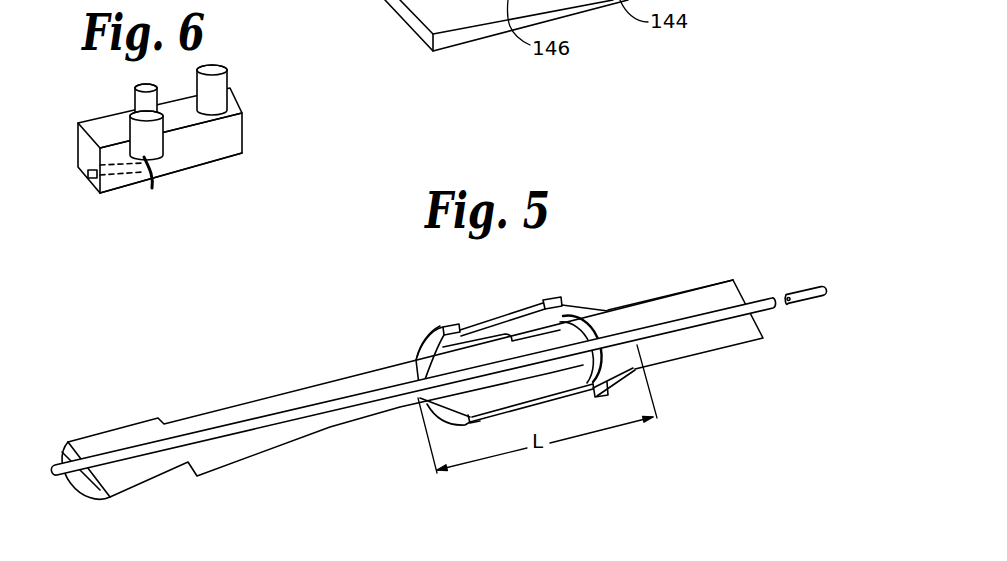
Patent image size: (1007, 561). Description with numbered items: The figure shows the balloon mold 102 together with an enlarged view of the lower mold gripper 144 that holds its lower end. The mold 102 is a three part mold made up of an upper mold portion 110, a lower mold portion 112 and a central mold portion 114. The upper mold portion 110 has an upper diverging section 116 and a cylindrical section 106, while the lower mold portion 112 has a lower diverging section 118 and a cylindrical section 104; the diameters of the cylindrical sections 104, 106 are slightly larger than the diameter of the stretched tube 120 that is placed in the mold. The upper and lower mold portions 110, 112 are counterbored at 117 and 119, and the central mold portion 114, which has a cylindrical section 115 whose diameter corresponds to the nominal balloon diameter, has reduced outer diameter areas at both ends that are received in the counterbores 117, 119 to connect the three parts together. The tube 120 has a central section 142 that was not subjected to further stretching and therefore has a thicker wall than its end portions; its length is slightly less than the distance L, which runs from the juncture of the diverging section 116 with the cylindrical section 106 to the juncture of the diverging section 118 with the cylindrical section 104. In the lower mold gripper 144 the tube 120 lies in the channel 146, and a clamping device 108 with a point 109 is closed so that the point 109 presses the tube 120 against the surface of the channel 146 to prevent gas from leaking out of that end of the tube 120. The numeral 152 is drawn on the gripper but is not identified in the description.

In FIG. 6, the mold 102 is at (143, 98).
In FIG. 5, the cylindrical section of lower mold portion 104 is at (213, 427).
In FIG. 5, the cylindrical section of upper mold portion 106 is at (685, 310).
In FIG. 6, the clamping device 108 is at (90, 175).
In FIG. 6, the point 109 is at (146, 166).
In FIG. 5, the upper mold portion 110 is at (640, 298).
In FIG. 5, the lower mold portion 112 is at (112, 437).
In FIG. 5, the central mold portion 114 is at (503, 303).
In FIG. 5, the cylindrical section of central mold portion 115 is at (458, 328).
In FIG. 5, the upper diverging section 116 is at (597, 312).
In FIG. 5, the counterbore 117 is at (552, 303).
In FIG. 5, the lower diverging section 118 is at (417, 362).
In FIG. 5, the counterbore 119 is at (440, 325).
In FIG. 6, the stretched tube 120 is at (160, 185).
In FIG. 5, the stretched tube 120 is at (307, 408).
In FIG. 5, the central section 142 is at (517, 340).
In FIG. 6, the lower mold gripper 144 is at (223, 140).
In FIG. 6, the channel 146 is at (157, 165).
In FIG. 6, the terminal post 152 is at (218, 80).